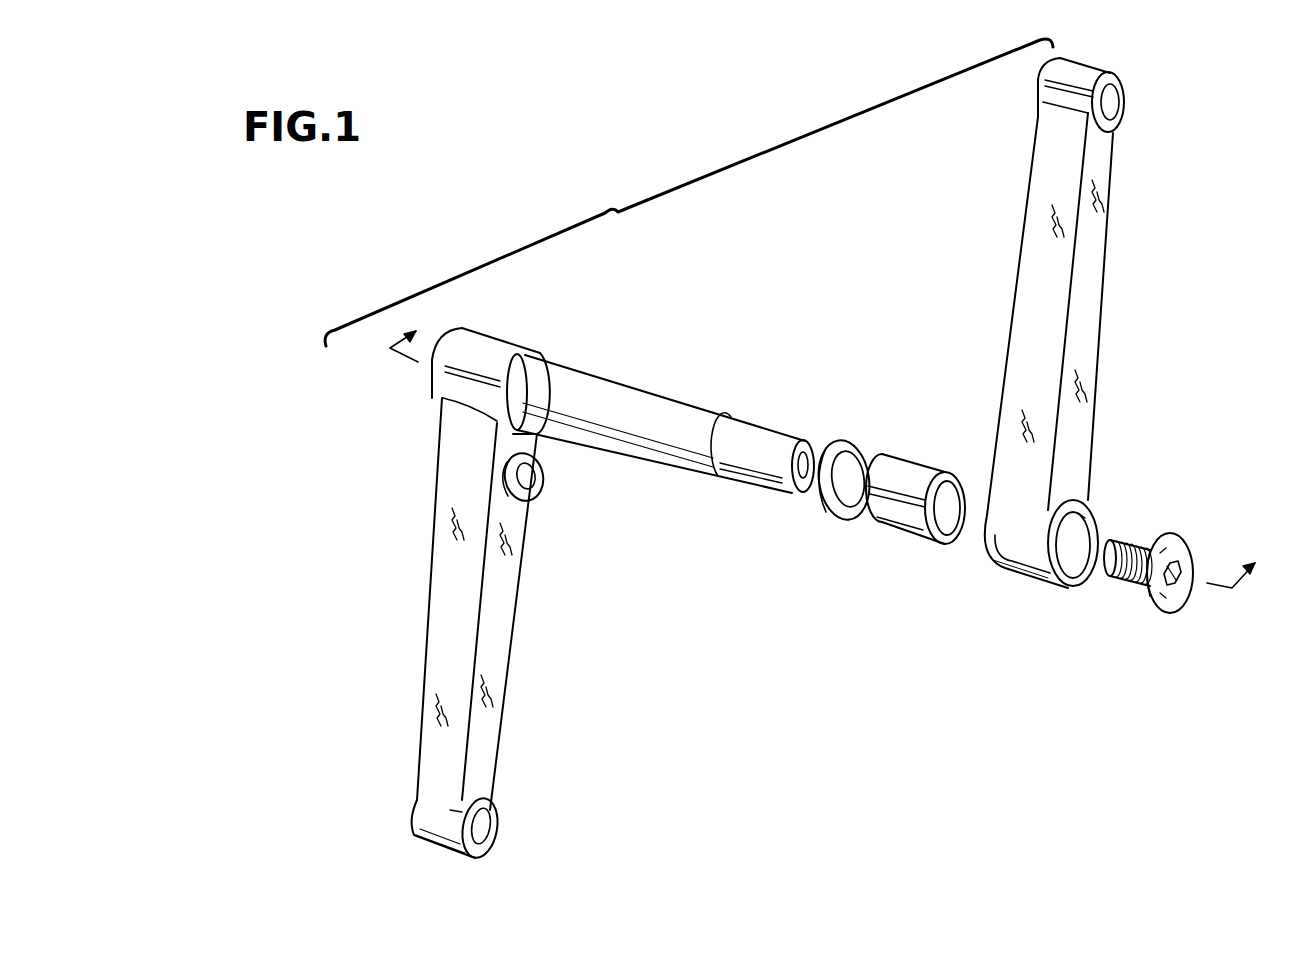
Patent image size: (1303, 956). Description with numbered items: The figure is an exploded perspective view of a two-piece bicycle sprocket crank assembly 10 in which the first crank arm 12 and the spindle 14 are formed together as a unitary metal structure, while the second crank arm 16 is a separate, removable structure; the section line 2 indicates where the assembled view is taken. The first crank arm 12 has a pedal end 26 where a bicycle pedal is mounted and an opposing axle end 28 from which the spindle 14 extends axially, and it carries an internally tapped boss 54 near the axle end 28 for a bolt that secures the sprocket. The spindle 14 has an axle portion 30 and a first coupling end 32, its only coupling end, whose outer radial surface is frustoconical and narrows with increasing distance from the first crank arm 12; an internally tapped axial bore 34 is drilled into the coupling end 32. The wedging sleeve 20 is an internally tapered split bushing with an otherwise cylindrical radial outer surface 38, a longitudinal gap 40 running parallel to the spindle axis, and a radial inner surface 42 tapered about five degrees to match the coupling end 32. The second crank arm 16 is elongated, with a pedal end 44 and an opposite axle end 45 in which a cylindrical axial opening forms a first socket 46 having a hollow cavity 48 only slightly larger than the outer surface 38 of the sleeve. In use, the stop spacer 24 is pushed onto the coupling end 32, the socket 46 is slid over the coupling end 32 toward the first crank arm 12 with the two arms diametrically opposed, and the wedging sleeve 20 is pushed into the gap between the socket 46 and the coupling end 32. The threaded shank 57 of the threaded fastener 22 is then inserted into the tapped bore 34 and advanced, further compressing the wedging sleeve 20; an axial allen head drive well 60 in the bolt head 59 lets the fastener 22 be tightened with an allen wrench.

The section line 2- 2 is at (814, 469).
The bicycle sprocket crank assembly 10 is at (608, 200).
The first crank arm 12 is at (466, 594).
The spindle 14 is at (660, 437).
The second crank arm 16 is at (1049, 353).
The wedging sleeve 20 is at (894, 496).
The threaded fastener 22 is at (1170, 551).
The stop spacer 24 is at (849, 439).
The pedal end 26 is at (433, 823).
The axle end 28 is at (465, 416).
The axle portion 30 is at (641, 452).
The first coupling end 32 is at (767, 434).
The internally tapped axial bore 34 is at (804, 479).
The radial outer surface 38 is at (898, 527).
The longitudinal gap 40 is at (876, 488).
The radial inner surface 42 is at (945, 526).
The pedal end 44 is at (1055, 121).
The axle end 45 is at (1072, 476).
The first socket 46 is at (1009, 572).
The hollow cavity 48 is at (1078, 566).
The internally tapped boss 54 is at (539, 492).
The threaded shank 57 is at (1122, 573).
The bolt head 59 is at (1181, 548).
The axial allen head drive well 60 is at (1182, 578).